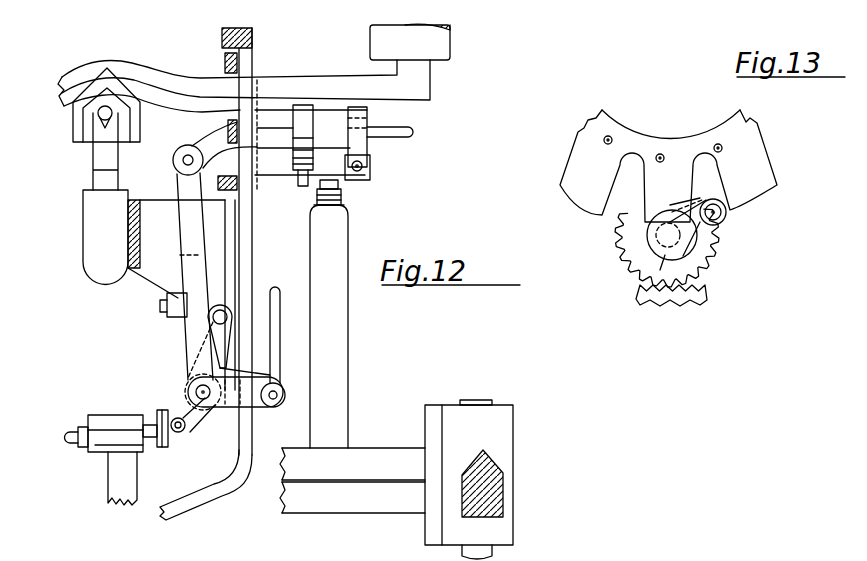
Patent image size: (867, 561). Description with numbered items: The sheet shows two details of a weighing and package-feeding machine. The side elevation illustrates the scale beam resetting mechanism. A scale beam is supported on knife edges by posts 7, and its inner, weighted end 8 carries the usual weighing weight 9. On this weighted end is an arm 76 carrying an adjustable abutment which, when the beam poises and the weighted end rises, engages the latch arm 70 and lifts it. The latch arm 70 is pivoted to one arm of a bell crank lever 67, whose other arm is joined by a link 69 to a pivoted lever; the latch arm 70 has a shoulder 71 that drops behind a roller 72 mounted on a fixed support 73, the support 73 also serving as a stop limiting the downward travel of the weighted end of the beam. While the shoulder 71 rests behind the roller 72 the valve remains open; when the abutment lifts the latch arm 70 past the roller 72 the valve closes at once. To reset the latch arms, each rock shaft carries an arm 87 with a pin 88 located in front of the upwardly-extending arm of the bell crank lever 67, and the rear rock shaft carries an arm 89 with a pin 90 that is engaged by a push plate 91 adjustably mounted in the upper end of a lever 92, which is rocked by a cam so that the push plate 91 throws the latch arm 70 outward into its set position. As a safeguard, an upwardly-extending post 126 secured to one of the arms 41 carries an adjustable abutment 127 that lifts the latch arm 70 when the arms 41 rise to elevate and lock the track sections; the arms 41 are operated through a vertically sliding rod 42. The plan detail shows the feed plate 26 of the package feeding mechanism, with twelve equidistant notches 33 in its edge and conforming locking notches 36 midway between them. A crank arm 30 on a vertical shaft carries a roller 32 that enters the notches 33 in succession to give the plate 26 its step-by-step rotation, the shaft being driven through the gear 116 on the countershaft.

In FIG. 12, the post 7 is at (90, 240).
In FIG. 12, the inner end of beam 8 is at (358, 80).
In FIG. 12, the weighing weight 9 is at (440, 43).
In FIG. 12, the latch arm 70 is at (217, 146).
In FIG. 12, the arm 76 is at (299, 118).
In FIG. 12, the fixed support 73 is at (367, 125).
In FIG. 12, the shoulder 71 is at (378, 138).
In FIG. 12, the roller 72 is at (366, 180).
In FIG. 12, the adjustable abutment 127 is at (338, 195).
In FIG. 12, the post 126 is at (330, 365).
In FIG. 12, the pin 88 is at (224, 314).
In FIG. 12, the arm 87 is at (228, 336).
In FIG. 12, the link 69 is at (287, 338).
In FIG. 12, the bell crank lever 67 is at (227, 410).
In FIG. 12, the arm 89 is at (190, 410).
In FIG. 12, the pin 90 is at (180, 434).
In FIG. 12, the push plate 91 is at (160, 412).
In FIG. 12, the lever 92 is at (110, 481).
In FIG. 12, the arm 41 is at (368, 462).
In FIG. 12, the rod 42 is at (490, 550).
In FIG. 13, the feed plate 26 is at (745, 165).
In FIG. 13, the notches 33 is at (705, 175).
In FIG. 13, the notches 36 is at (588, 190).
In FIG. 13, the gear 116 is at (660, 297).
In FIG. 13, the crank arm 30 is at (698, 240).
In FIG. 13, the roller 32 is at (726, 218).